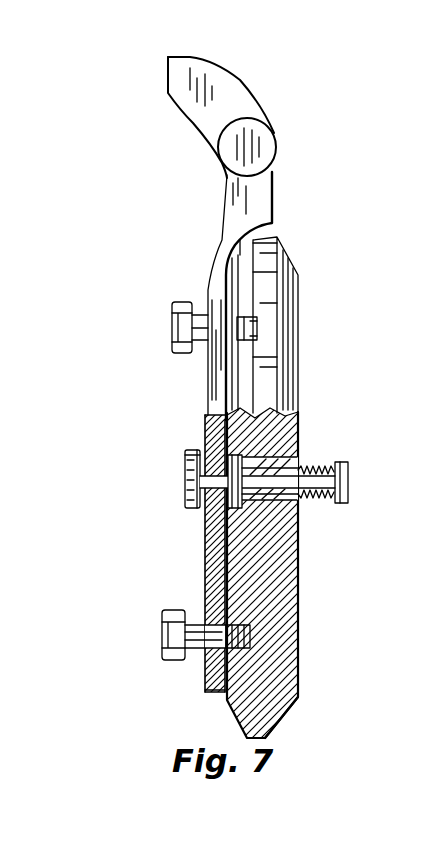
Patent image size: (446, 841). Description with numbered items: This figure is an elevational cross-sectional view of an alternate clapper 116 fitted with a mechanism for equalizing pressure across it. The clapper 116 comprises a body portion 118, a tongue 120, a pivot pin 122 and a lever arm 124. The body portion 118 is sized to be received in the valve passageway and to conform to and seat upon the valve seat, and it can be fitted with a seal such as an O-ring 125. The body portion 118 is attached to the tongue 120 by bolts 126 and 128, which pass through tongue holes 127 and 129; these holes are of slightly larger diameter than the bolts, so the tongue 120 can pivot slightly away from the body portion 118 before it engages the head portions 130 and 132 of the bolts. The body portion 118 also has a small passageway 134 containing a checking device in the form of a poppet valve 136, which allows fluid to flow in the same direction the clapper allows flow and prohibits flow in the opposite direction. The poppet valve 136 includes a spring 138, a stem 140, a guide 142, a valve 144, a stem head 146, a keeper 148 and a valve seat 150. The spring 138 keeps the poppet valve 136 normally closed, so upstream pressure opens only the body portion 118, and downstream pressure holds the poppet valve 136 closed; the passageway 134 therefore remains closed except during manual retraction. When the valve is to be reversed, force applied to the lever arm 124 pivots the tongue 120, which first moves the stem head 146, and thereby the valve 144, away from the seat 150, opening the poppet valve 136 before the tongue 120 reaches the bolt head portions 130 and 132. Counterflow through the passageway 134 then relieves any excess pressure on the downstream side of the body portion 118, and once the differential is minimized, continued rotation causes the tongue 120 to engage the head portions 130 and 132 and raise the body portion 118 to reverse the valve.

The clapper 116 is at (300, 276).
The body portion 118 is at (282, 373).
The tongue 120 is at (223, 238).
The pivot pin 122 is at (277, 147).
The lever arm 124 is at (212, 76).
The O-ring 125 is at (280, 710).
The bolt 126 is at (263, 328).
The tongue hole 127 is at (208, 332).
The bolt 128 is at (250, 632).
The tongue hole 129 is at (202, 673).
The head portion 130 is at (172, 320).
The head portion 132 is at (162, 622).
The passageway 134 is at (297, 543).
The poppet valve 136 is at (274, 495).
The spring 138 is at (323, 472).
The stem 140 is at (343, 503).
The guide 142 is at (297, 503).
The valve 144 is at (210, 515).
The stem head 146 is at (192, 480).
The keeper 148 is at (348, 482).
The valve seat 150 is at (187, 465).